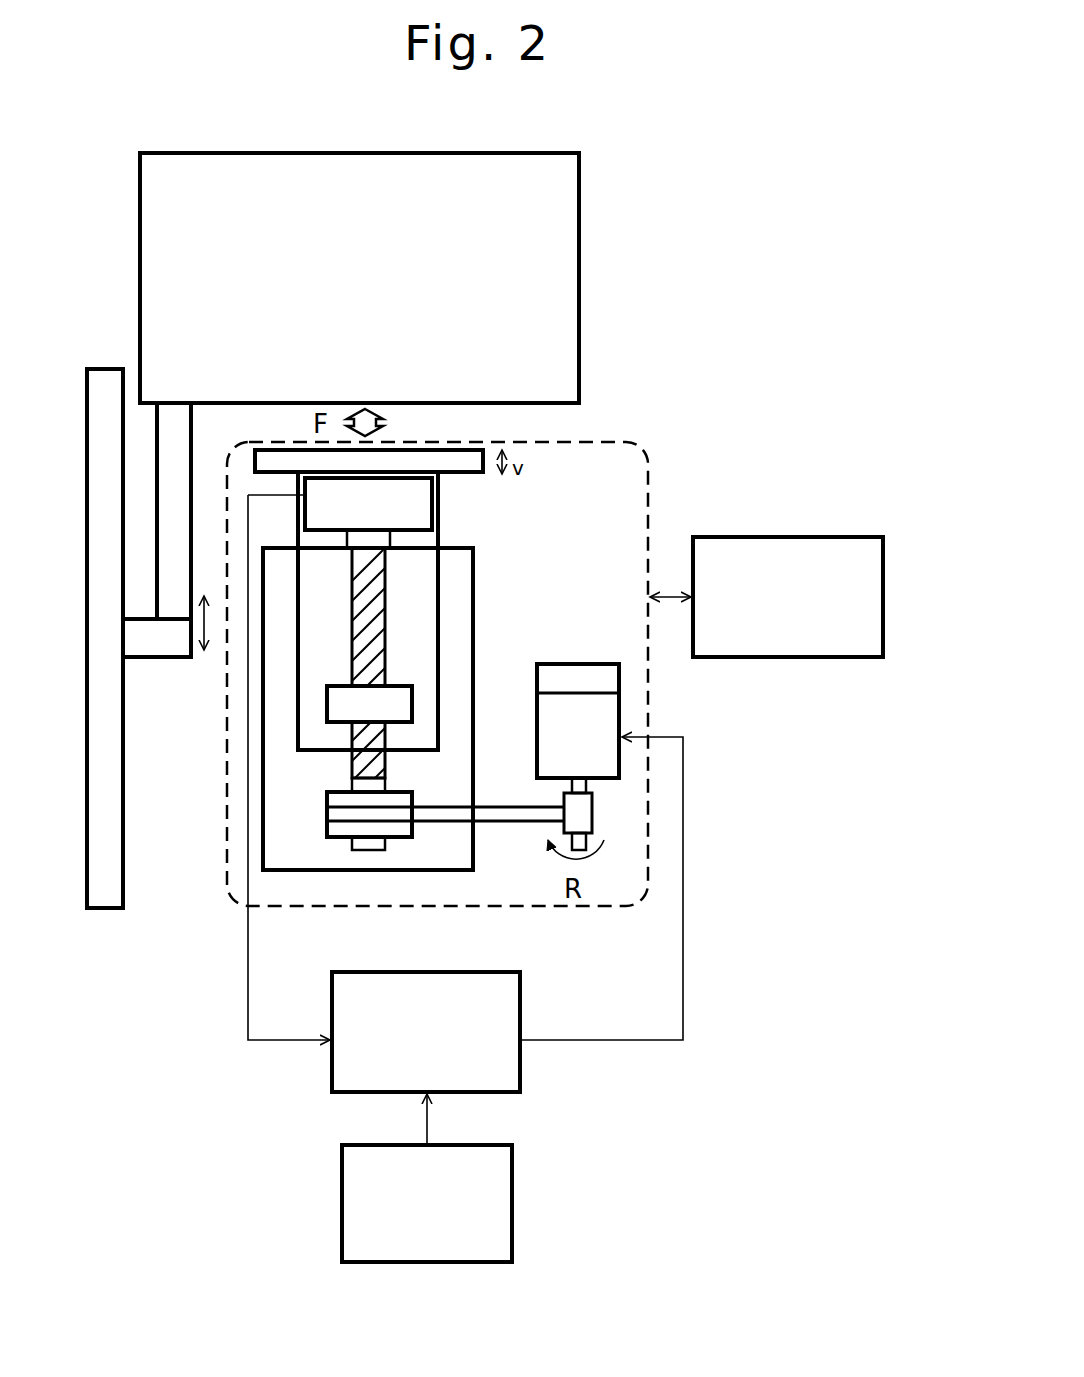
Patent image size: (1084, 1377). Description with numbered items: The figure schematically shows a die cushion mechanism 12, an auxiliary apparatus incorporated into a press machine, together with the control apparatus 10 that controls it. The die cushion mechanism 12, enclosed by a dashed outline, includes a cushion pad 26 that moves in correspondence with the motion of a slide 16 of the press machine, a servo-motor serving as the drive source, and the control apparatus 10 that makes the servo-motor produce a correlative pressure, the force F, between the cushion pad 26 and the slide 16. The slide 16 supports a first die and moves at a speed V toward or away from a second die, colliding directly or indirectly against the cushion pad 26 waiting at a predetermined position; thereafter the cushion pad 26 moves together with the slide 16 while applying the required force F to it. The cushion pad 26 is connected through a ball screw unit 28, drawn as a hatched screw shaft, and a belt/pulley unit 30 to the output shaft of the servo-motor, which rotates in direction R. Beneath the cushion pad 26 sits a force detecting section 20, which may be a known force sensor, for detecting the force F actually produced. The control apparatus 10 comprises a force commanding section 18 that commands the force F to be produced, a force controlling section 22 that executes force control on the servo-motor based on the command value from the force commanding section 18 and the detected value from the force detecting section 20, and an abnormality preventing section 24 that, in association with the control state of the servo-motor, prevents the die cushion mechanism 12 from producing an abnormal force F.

The control apparatus 10 is at (618, 1172).
The die cushion mechanism 12 is at (656, 466).
The slide 16 is at (580, 233).
The force commanding section 18 is at (485, 1262).
The force detecting section 20 is at (425, 512).
The force controlling section 22 is at (520, 1080).
The abnormality preventing section 24 is at (884, 581).
The cushion pad 26 is at (447, 456).
The ball screw unit 28 is at (385, 609).
The belt/pulley unit 30 is at (497, 818).